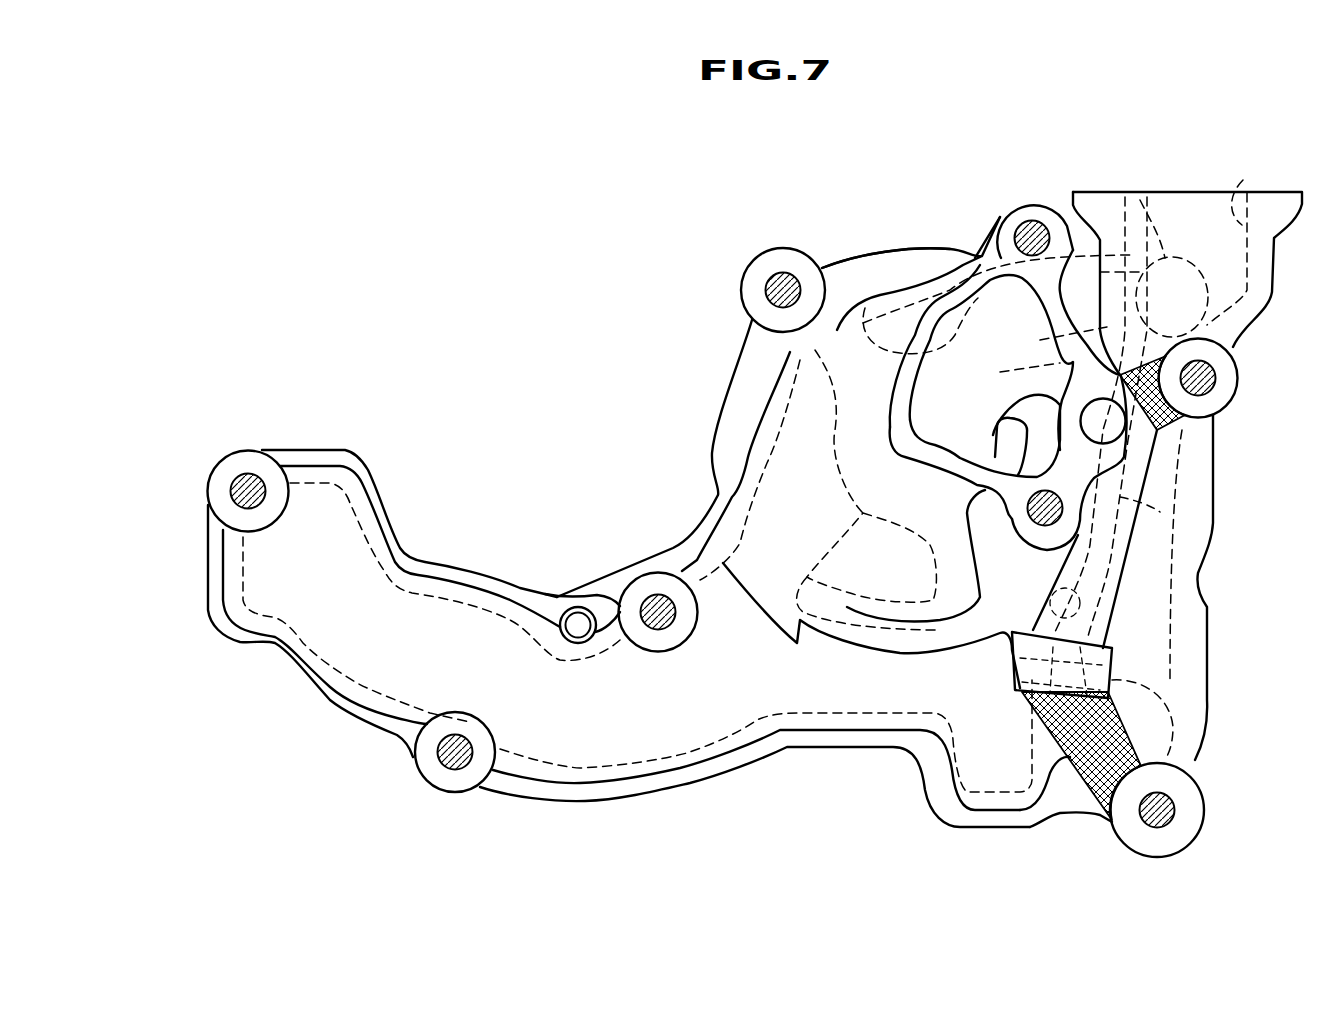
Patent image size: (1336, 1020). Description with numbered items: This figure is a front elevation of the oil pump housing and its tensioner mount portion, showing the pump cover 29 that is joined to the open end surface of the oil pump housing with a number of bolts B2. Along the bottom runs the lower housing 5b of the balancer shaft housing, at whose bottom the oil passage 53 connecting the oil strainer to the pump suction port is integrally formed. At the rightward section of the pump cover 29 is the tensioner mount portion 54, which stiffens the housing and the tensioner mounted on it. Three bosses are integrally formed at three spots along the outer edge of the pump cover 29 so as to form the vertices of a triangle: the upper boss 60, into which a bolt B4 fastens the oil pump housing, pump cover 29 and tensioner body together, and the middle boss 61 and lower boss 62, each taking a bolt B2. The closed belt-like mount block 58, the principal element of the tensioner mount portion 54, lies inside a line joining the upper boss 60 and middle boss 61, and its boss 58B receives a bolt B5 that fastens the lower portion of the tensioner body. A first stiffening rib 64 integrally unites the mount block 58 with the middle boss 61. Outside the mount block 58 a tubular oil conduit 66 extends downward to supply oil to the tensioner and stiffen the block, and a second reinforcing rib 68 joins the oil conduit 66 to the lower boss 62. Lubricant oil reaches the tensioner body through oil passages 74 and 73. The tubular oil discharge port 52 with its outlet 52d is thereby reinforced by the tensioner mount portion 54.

The lower housing 5b is at (880, 248).
The pump cover 29 is at (688, 445).
The tubular oil discharge port 52 is at (1125, 197).
The outlet 52d is at (1243, 180).
The oil passage 53 is at (650, 716).
The tensioner mount portion 54 is at (945, 303).
The closed belt-like mount block 58 is at (1062, 308).
The boss 58B is at (1008, 507).
The upper boss 60 is at (1033, 210).
The middle boss 61 is at (1222, 393).
The lower boss 62 is at (1183, 793).
The first stiffening rib 64 is at (1147, 415).
The tubular oil conduit 66 is at (1120, 543).
The second reinforcing rib 68 is at (1112, 745).
The oil passage 73 is at (1120, 497).
The oil passage 74 is at (1107, 640).
The bolt B2 is at (242, 474).
The bolt B4 is at (1020, 230).
The bolt B5 is at (1033, 514).